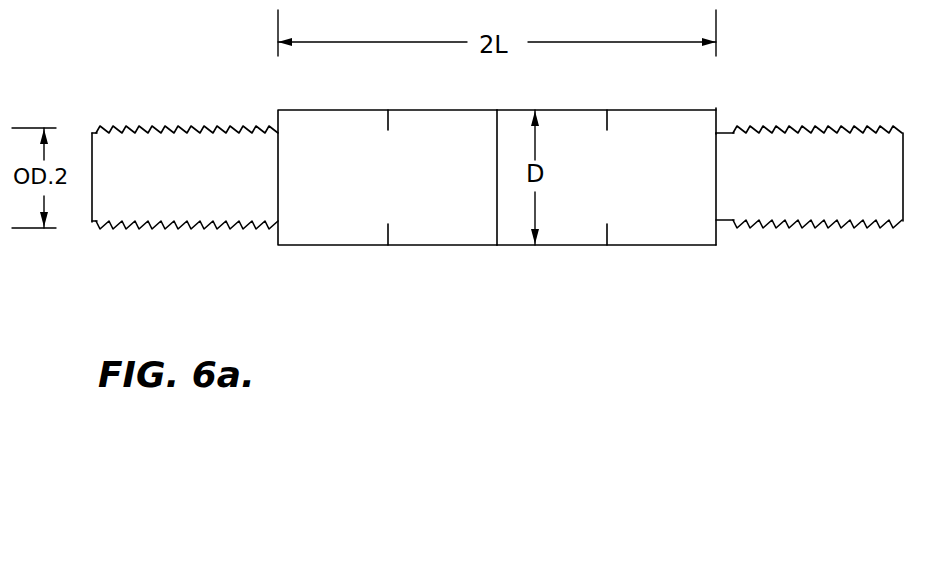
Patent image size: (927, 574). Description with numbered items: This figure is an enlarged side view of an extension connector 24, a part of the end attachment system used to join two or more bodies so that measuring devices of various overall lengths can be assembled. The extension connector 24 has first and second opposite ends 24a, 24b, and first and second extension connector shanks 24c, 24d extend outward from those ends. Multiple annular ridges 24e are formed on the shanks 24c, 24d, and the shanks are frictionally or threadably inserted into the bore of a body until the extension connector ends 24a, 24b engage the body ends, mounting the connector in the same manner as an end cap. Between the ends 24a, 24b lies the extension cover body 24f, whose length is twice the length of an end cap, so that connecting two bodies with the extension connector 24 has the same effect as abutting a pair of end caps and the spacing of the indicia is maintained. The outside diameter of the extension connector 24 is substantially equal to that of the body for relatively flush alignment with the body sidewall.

The extension connector 24 is at (92, 222).
The first extension connector end 24a is at (276, 246).
The second extension connector end 24b is at (717, 246).
The first extension connector shank 24c is at (92, 132).
The second extension connector shank 24d is at (903, 133).
The annular ridges 24e is at (211, 130).
The extension cover body 24f is at (718, 110).